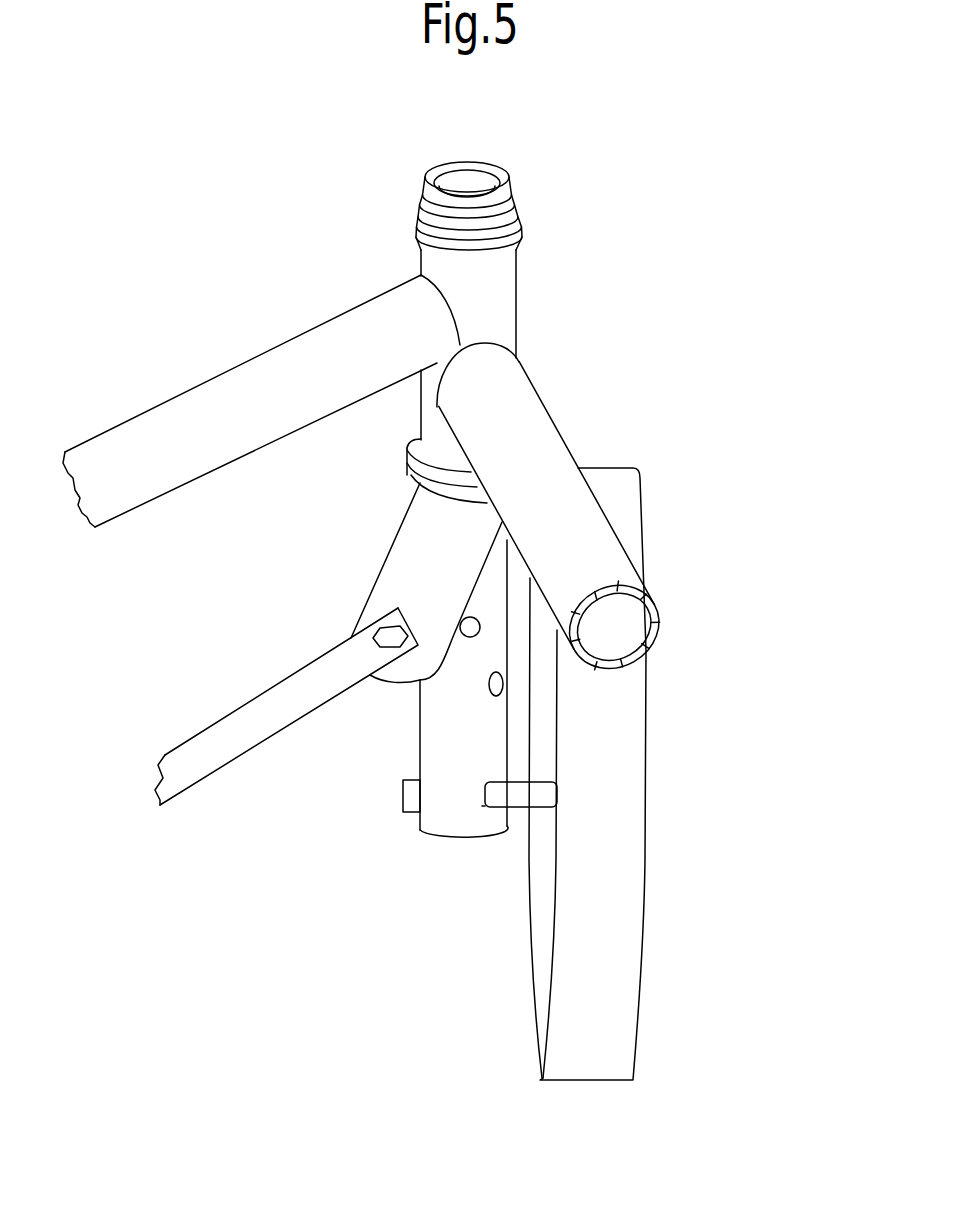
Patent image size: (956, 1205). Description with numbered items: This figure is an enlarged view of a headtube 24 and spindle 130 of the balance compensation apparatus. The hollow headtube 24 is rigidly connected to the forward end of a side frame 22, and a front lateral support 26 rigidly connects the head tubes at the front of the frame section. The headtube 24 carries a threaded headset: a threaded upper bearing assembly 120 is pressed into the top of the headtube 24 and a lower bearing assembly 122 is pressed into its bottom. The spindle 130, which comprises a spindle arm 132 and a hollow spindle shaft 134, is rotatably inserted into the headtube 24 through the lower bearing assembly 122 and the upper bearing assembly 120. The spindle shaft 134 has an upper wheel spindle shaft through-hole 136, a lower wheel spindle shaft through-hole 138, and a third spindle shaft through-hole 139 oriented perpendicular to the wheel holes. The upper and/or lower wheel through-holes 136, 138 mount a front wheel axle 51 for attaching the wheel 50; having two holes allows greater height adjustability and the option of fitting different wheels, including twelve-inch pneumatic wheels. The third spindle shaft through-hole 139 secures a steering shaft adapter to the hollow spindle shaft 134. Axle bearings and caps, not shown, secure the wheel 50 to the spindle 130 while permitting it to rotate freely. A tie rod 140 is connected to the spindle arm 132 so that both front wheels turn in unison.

The threaded upper bearing assembly 120 is at (515, 185).
The headtube 24 is at (500, 318).
The front lateral support 26 is at (242, 367).
The side frame 22 is at (534, 403).
The lower bearing assembly 122 is at (405, 463).
The spindle arm 132 is at (407, 553).
The third spindle shaft through-hole 139 is at (478, 618).
The tie rod 140 is at (275, 689).
The upper wheel spindle shaft through-hole 136 is at (504, 683).
The spindle 130 is at (386, 697).
The hollow spindle shaft 134 is at (435, 820).
The front wheel axle 51 is at (530, 795).
The lower wheel spindle shaft through-hole 138 is at (482, 806).
The wheel 50 is at (645, 921).